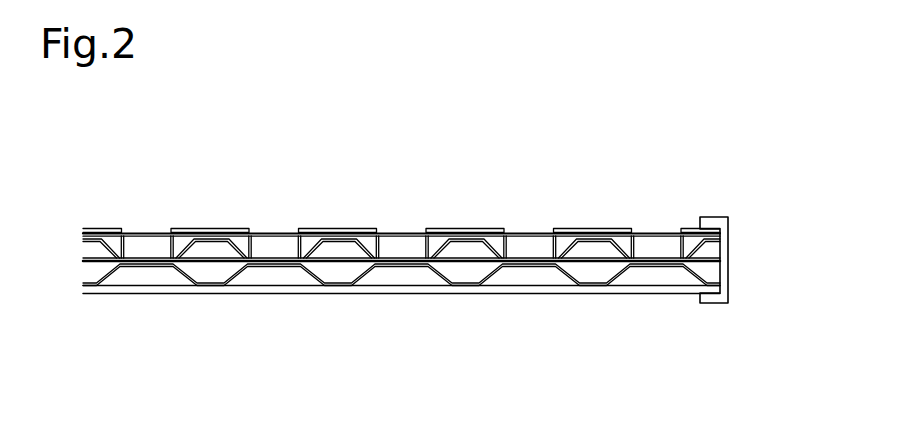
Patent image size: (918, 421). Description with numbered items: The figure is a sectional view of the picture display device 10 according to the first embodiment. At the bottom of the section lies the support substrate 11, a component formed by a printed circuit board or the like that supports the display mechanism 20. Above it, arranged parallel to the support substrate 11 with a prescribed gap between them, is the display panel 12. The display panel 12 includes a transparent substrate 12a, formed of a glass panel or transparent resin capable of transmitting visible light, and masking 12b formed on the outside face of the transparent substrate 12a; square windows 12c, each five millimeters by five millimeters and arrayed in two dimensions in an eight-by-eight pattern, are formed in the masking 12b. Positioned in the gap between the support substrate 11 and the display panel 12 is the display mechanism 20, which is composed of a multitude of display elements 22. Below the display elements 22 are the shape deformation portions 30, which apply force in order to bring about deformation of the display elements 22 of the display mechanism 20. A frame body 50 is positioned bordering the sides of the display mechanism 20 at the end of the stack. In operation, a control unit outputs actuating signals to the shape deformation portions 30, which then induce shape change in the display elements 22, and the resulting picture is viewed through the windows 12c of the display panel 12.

The picture display device 10 is at (716, 124).
The support substrate 11 is at (142, 295).
The display panel 12 is at (255, 182).
The transparent substrate 12a is at (147, 229).
The masking 12b is at (212, 229).
The window 12c is at (280, 230).
The display mechanism 20 is at (555, 182).
The display element 22 is at (403, 247).
The shape deformation portion 30 is at (403, 263).
The frame body 50 is at (728, 256).